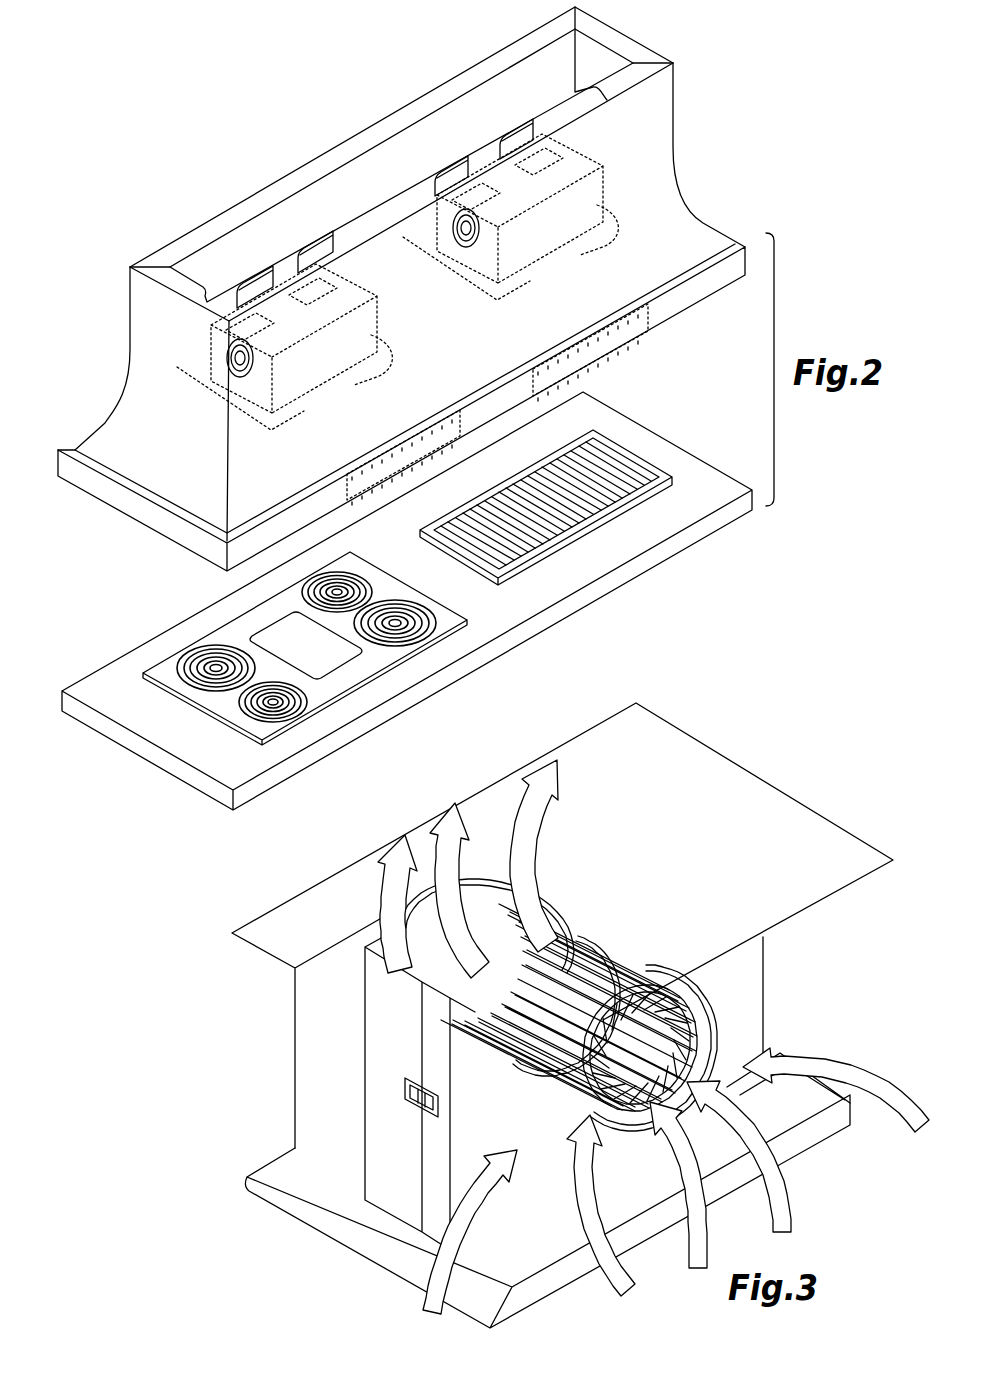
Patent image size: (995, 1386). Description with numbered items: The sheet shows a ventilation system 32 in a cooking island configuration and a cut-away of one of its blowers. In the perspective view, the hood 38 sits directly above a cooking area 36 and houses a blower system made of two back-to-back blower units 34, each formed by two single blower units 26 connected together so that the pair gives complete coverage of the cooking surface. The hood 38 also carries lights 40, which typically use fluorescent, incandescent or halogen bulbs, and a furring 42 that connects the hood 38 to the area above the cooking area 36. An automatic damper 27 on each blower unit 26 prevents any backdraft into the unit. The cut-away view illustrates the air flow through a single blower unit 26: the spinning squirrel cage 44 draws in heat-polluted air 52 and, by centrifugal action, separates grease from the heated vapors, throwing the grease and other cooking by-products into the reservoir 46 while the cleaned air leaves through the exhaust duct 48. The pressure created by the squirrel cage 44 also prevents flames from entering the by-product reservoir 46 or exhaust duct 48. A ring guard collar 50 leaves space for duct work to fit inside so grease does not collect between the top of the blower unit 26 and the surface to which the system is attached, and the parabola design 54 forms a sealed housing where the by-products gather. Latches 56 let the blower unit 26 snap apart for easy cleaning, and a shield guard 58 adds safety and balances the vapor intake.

In FIG. 2, the single blower unit 26 is at (604, 213).
In FIG. 3, the single blower unit 26 is at (762, 800).
In FIG. 2, the automatic damper 27 is at (527, 128).
In FIG. 2, the ventilation system 32 is at (667, 95).
In FIG. 2, the back-to-back blower unit 34 is at (548, 255).
In FIG. 2, the cooking area 36 is at (640, 565).
In FIG. 2, the hood 38 is at (686, 213).
In FIG. 2, the lights 40 is at (612, 340).
In FIG. 2, the furring 42 is at (693, 115).
In FIG. 3, the squirrel cage 44 is at (670, 1033).
In FIG. 3, the reservoir 46 is at (535, 1205).
In FIG. 3, the exhaust duct 48 is at (487, 882).
In FIG. 3, the ring guard collar 50 is at (583, 984).
In FIG. 3, the heat-polluted air 52 is at (467, 950).
In FIG. 3, the parabola design 54 is at (720, 990).
In FIG. 3, the latches 56 is at (407, 1088).
In FIG. 3, the shield guard 58 is at (803, 1148).